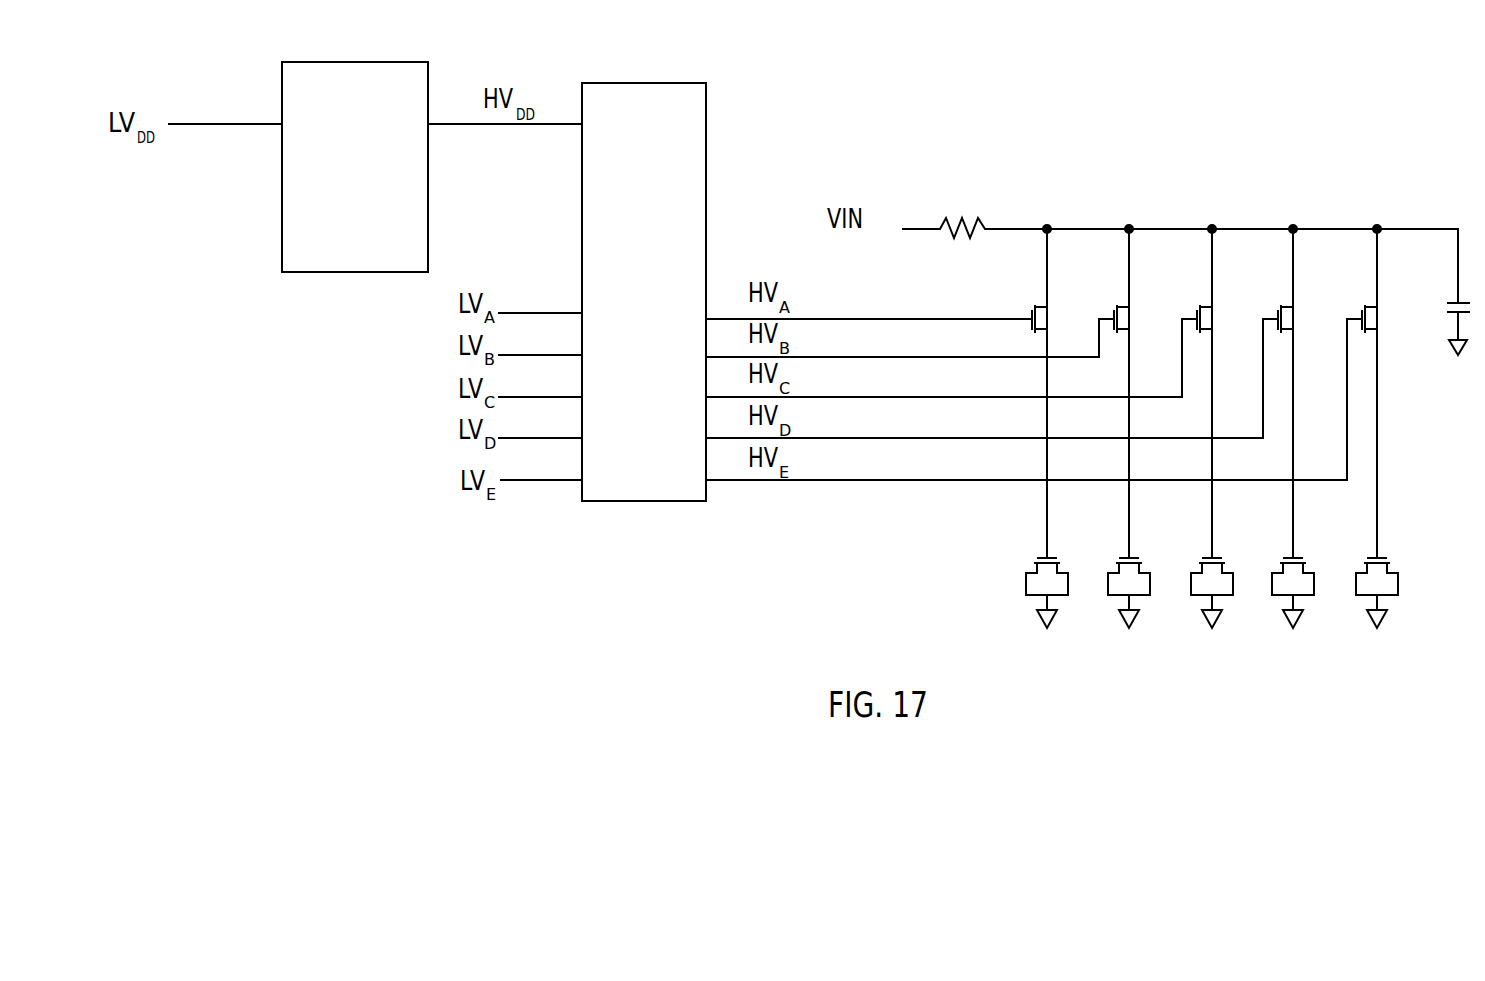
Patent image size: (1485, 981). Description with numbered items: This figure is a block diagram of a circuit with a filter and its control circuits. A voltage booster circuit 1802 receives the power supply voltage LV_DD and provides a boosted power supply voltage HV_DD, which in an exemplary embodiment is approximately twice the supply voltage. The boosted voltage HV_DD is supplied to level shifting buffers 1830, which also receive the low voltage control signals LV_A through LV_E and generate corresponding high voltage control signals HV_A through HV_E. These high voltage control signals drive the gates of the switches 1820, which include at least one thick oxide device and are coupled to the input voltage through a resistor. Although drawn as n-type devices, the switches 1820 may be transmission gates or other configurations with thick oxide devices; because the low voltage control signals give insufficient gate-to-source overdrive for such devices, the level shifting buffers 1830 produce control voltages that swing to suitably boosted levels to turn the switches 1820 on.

The voltage booster circuit 1802 is at (383, 198).
The level shifting buffers 1830 is at (673, 365).
The switches 1820 is at (1052, 306).